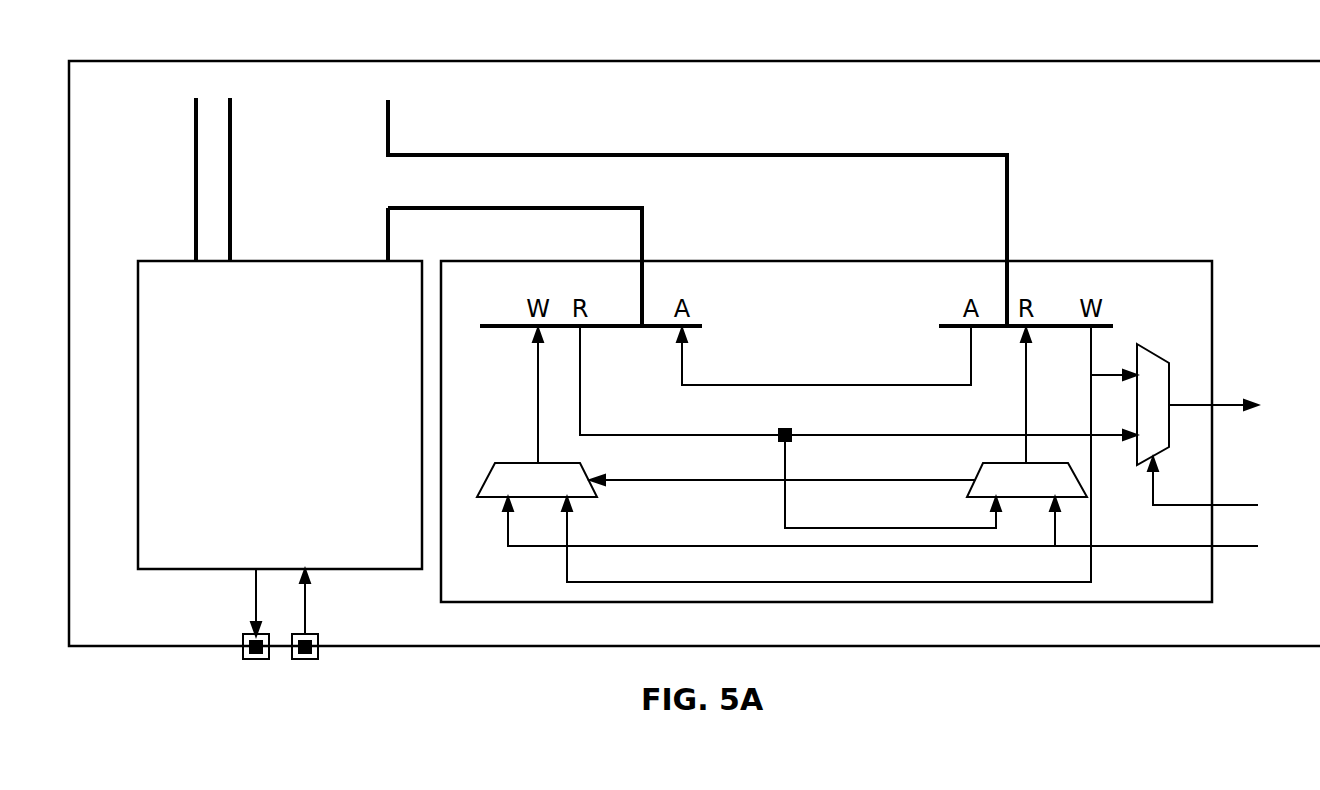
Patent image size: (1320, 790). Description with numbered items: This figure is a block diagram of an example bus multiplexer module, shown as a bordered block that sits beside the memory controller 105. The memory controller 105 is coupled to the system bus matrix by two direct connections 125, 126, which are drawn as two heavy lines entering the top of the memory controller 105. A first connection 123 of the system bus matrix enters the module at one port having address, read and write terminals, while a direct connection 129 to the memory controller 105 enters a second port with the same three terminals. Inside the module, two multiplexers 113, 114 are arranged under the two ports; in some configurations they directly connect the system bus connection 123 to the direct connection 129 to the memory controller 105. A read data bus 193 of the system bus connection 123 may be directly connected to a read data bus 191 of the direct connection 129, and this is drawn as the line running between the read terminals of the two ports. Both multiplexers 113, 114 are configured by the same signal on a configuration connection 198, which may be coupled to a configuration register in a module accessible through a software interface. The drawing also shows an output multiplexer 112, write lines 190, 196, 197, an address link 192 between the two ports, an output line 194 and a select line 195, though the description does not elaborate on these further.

The memory controller 105 is at (278, 260).
The output multiplexer 112 is at (1152, 347).
The multiplexer 113 is at (518, 463).
The multiplexer 114 is at (968, 490).
The first connection 123 is at (699, 153).
The direct connection 125 is at (195, 146).
The direct connection 126 is at (231, 180).
The direct connection 129 is at (644, 230).
The first port write line 190 is at (536, 380).
The read data bus 191 is at (582, 387).
The address connection between ports 192 is at (928, 384).
The read data bus 193 is at (1024, 383).
The multiplexer output line 194 is at (1203, 407).
The multiplexer select line 195 is at (1224, 505).
The second port write feedback line 196 is at (1092, 563).
The write data input line 197 is at (700, 546).
The configuration connection 198 is at (708, 479).